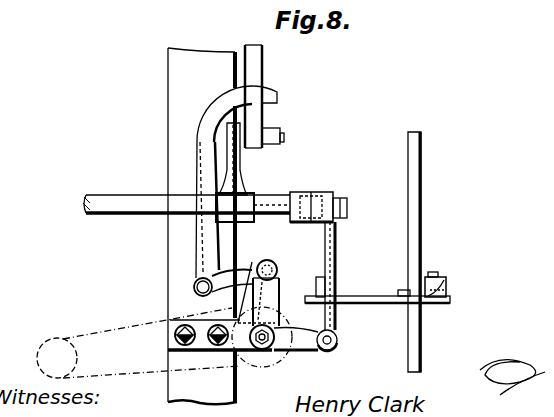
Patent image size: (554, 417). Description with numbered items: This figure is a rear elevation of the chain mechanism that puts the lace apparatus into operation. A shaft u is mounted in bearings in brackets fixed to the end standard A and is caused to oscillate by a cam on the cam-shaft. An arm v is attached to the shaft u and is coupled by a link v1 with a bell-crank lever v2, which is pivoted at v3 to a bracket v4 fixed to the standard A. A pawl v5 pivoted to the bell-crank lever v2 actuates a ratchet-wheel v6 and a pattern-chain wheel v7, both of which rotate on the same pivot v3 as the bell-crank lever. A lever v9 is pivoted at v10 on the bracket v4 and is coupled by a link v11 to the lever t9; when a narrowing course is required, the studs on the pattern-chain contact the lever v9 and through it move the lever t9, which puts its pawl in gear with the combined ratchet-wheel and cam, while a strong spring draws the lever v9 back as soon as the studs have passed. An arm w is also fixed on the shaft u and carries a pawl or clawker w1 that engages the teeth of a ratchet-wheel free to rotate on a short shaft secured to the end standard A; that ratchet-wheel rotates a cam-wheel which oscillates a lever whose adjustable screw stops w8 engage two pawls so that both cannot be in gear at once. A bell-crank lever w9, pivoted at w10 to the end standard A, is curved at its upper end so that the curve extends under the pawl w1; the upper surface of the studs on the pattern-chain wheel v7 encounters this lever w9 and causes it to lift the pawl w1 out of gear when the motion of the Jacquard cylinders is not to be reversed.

The end standard A is at (220, 226).
The shaft u is at (186, 204).
The arm w is at (238, 172).
The pawl or clawker w1 is at (262, 110).
The adjustable screw stop w8 is at (207, 152).
The bell-crank lever w9 is at (238, 282).
The pivot w10 is at (194, 286).
The arm v is at (320, 193).
The link v1 is at (336, 238).
The bell-crank lever v2 is at (305, 340).
The pivot v3 is at (278, 353).
The bracket v4 is at (206, 348).
The pawl v5 is at (245, 294).
The ratchet-wheel v6 is at (261, 368).
The pattern-chain wheel v7 is at (106, 330).
The lever v9 is at (360, 299).
The pivot v10 is at (326, 288).
The link v11 is at (447, 281).
The lever t9 is at (403, 252).